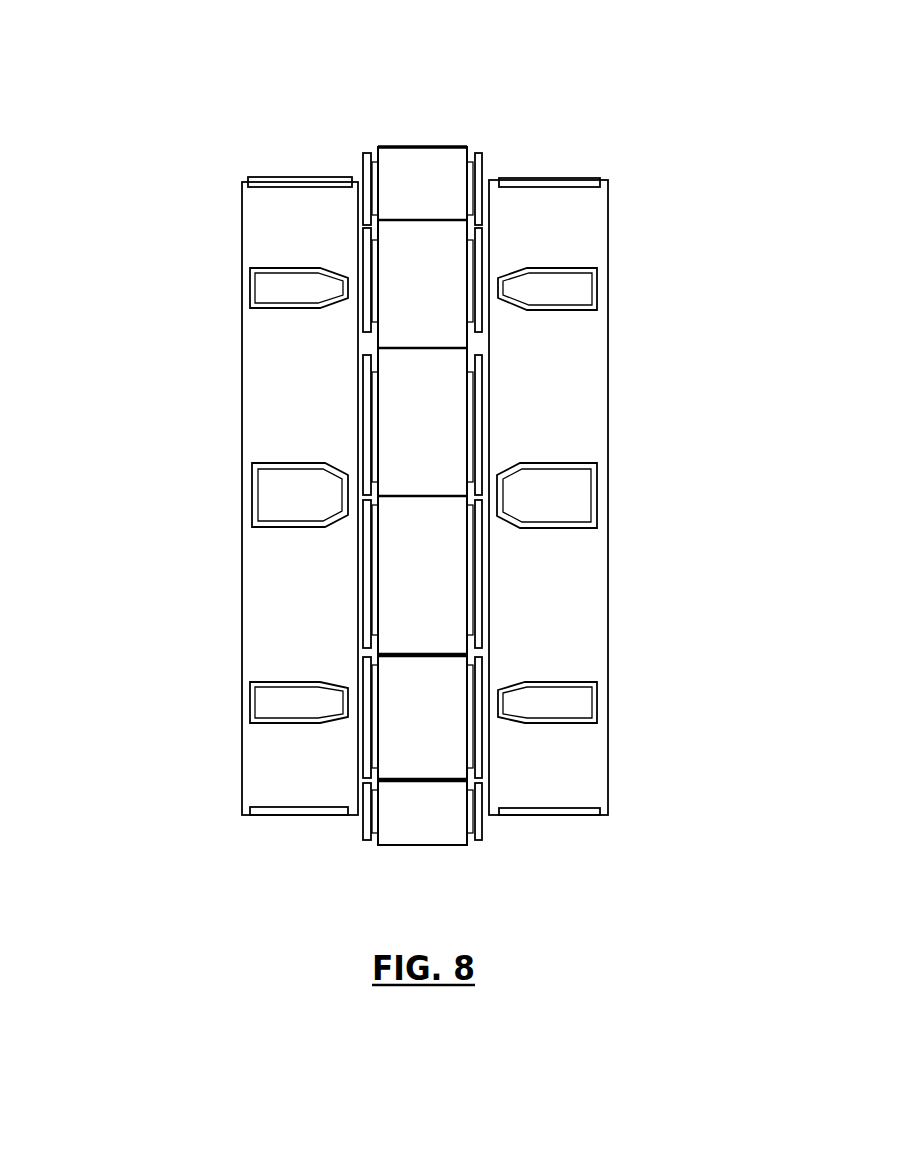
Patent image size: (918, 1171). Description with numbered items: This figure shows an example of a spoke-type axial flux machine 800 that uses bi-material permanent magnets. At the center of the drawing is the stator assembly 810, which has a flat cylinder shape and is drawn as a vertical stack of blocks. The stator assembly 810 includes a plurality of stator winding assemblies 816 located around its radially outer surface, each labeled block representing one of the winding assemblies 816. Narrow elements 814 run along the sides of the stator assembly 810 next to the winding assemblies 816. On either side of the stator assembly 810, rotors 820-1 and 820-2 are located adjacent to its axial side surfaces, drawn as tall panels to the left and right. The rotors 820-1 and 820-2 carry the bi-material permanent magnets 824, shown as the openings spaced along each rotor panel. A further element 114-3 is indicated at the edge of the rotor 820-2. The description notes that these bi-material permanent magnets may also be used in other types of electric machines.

The spoke-type axial flux machine 800 is at (600, 88).
The stator assembly 810 is at (398, 108).
The side rails 814 is at (483, 158).
The stator winding assemblies 816 is at (435, 158).
The rotor 820-1 is at (211, 203).
The rotor 820-2 is at (628, 190).
The bi-material permanent magnets 824 is at (275, 267).
The frame member 114-3 is at (608, 236).